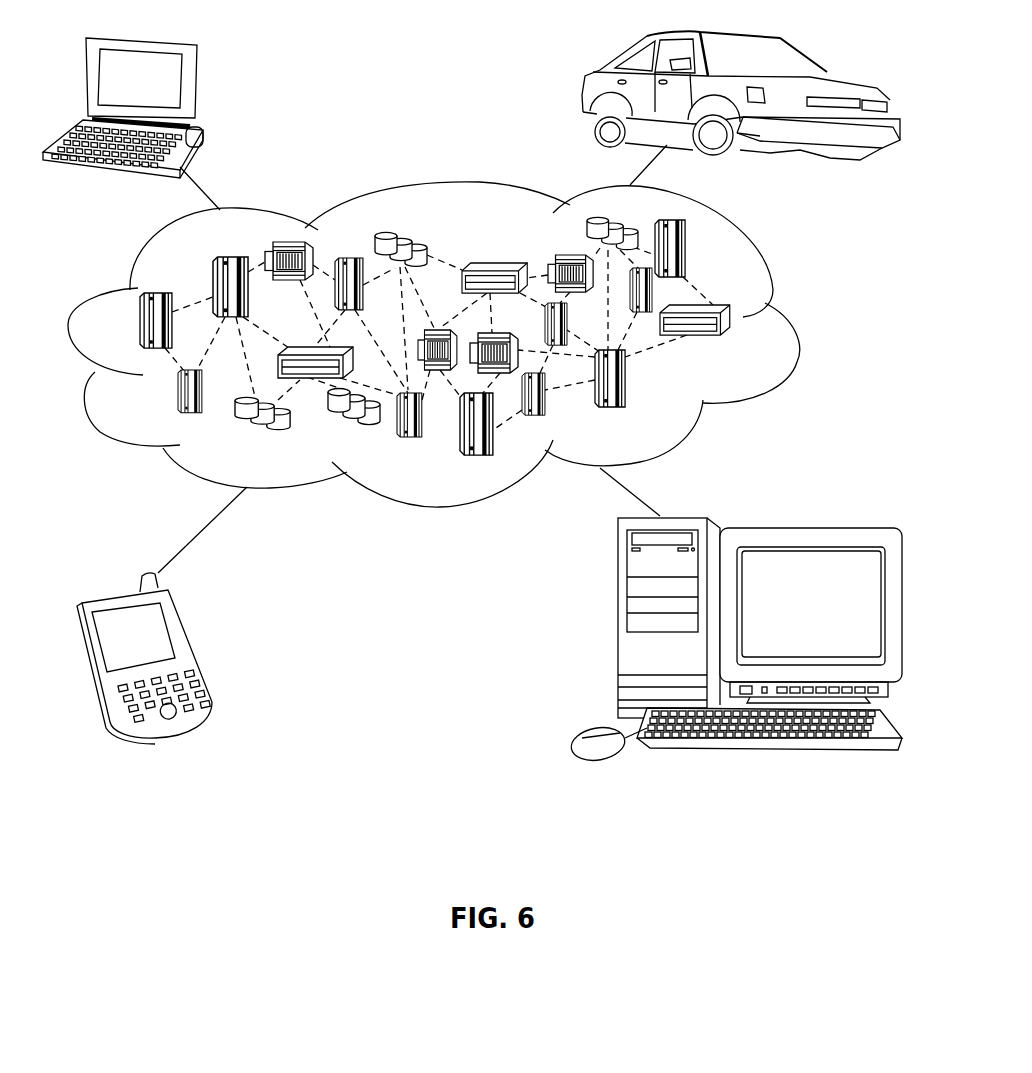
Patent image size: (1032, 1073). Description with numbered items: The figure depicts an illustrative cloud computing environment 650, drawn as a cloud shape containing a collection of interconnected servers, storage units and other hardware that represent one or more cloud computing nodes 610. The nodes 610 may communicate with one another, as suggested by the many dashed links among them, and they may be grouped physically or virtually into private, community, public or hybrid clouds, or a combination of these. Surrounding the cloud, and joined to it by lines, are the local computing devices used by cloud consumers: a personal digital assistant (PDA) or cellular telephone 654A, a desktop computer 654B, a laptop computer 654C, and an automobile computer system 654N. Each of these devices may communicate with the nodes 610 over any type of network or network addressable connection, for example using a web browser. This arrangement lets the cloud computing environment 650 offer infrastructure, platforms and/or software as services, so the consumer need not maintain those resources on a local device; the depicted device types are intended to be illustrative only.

The laptop computer 654C is at (200, 87).
The automobile computer system 654N is at (588, 87).
The cloud computing environment 650 is at (773, 282).
The cloud computing nodes 610 is at (762, 345).
The personal digital assistant (PDA) or cellular telephone 654A is at (193, 648).
The desktop computer 654B is at (619, 627).